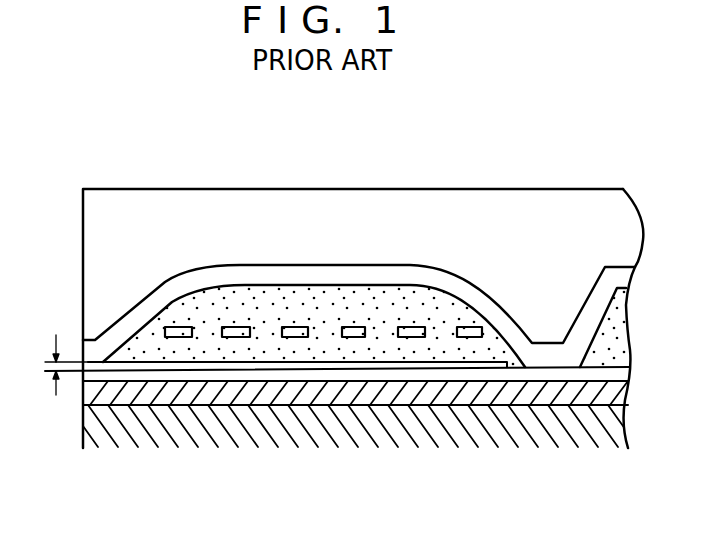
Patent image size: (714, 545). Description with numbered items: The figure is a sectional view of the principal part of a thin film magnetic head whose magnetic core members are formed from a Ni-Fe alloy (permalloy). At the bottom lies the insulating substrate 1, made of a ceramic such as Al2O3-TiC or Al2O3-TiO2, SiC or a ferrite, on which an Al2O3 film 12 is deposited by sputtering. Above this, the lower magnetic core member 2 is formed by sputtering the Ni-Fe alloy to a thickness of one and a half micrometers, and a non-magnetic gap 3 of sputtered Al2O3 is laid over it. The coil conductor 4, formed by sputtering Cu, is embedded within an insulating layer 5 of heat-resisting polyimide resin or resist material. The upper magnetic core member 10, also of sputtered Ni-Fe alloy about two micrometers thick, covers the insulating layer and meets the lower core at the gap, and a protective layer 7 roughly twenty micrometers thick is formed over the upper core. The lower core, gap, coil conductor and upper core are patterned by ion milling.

The insulating substrate 1 is at (132, 432).
The Al2O3 film 12 is at (213, 395).
The non-magnetic gap 3 is at (275, 363).
The lower magnetic core member 2 is at (83, 374).
The insulating layer 5 is at (145, 335).
The coil conductor 4 is at (292, 327).
The upper magnetic core member 10 is at (208, 277).
The protective layer 7 is at (294, 205).